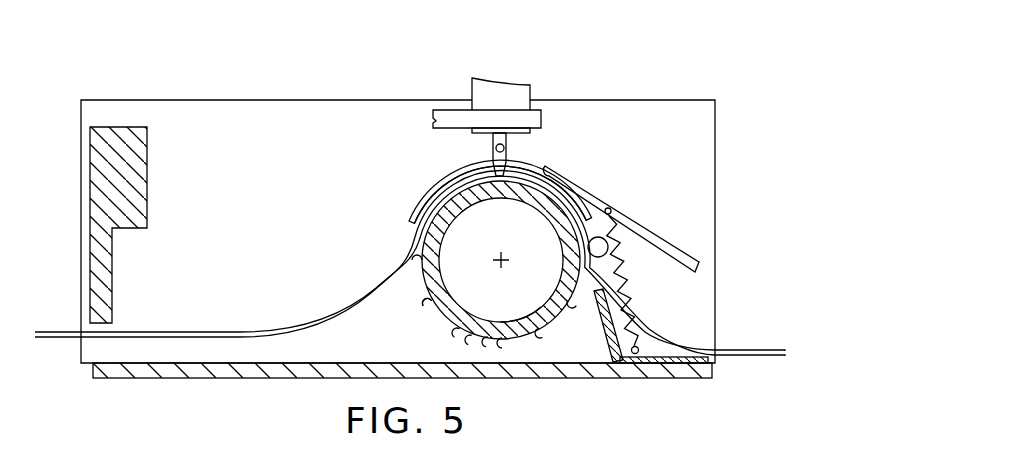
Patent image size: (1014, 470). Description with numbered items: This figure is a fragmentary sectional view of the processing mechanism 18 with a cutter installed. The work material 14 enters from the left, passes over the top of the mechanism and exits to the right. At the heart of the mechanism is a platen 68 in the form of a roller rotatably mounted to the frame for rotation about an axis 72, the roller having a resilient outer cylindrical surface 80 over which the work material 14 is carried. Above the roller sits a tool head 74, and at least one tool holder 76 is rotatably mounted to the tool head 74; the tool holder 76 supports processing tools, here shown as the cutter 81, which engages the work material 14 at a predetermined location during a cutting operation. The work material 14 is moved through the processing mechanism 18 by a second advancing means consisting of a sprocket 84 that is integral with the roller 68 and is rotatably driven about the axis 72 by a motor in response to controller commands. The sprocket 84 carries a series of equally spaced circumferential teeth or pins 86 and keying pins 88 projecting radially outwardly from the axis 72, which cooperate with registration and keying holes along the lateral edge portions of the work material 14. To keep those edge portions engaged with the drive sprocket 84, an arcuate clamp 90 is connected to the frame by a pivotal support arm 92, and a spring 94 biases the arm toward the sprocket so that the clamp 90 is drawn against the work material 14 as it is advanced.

The work material 14 is at (232, 330).
The processing mechanism 18 is at (211, 90).
The platen 68 is at (515, 328).
The axis 72 is at (503, 258).
The tool head 74 is at (515, 98).
The tool holder 76 is at (510, 135).
The resilient outer cylindrical surface 80 is at (463, 188).
The cutter 81 is at (492, 165).
The sprocket 84 is at (537, 285).
The teeth or pins 86 is at (426, 306).
The keying pins 88 is at (483, 337).
The arcuate clamp 90 is at (420, 203).
The pivotal support arm 92 is at (645, 229).
The spring 94 is at (627, 272).